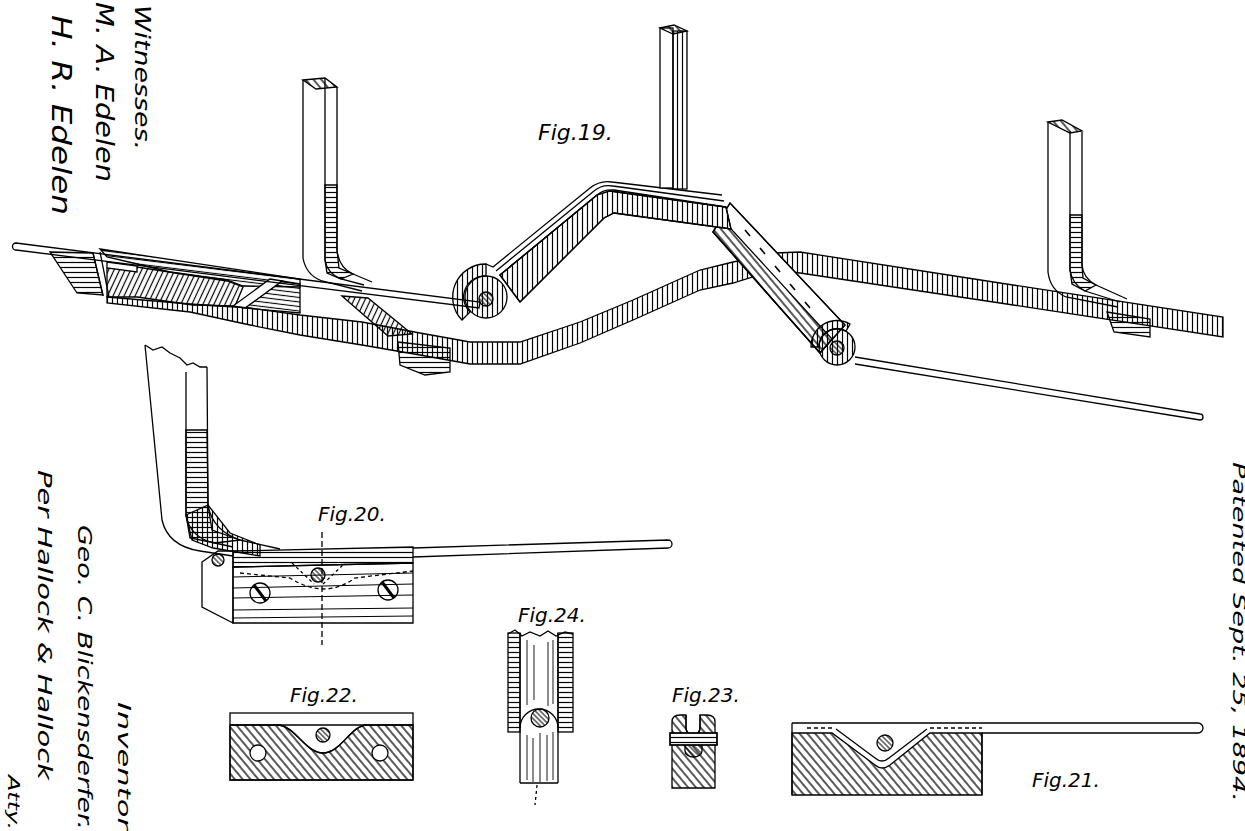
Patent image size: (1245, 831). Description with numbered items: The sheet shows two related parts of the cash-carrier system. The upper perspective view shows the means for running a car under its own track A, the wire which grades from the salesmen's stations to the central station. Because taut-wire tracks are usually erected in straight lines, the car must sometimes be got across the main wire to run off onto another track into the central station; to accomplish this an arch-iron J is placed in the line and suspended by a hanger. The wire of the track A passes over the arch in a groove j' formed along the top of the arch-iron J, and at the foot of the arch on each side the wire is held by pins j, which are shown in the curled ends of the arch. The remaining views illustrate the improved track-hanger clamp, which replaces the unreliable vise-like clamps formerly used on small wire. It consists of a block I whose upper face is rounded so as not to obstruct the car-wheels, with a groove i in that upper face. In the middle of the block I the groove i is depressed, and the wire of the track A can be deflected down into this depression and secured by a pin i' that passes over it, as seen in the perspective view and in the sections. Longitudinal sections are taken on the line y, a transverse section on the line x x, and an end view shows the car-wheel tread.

In FIG. 19, the track A is at (247, 275).
In FIG. 20, the track A is at (609, 540).
In FIG. 21, the track A is at (842, 728).
In FIG. 19, the arch-iron J is at (597, 231).
In FIG. 19, the pins j is at (663, 344).
In FIG. 19, the groove j' is at (605, 144).
In FIG. 20, the block I is at (414, 591).
In FIG. 22, the block I is at (372, 779).
In FIG. 24, the block I is at (556, 758).
In FIG. 23, the block I is at (671, 769).
In FIG. 21, the block I is at (887, 759).
In FIG. 22, the groove i is at (312, 724).
In FIG. 23, the groove i is at (693, 714).
In FIG. 20, the pin i' is at (322, 584).
In FIG. 22, the pin i' is at (331, 730).
In FIG. 24, the pin i' is at (518, 731).
In FIG. 23, the pin i' is at (704, 738).
In FIG. 21, the pin i' is at (894, 728).
In FIG. 20, the section line x x is at (319, 587).
In FIG. 24, the section line y is at (531, 803).